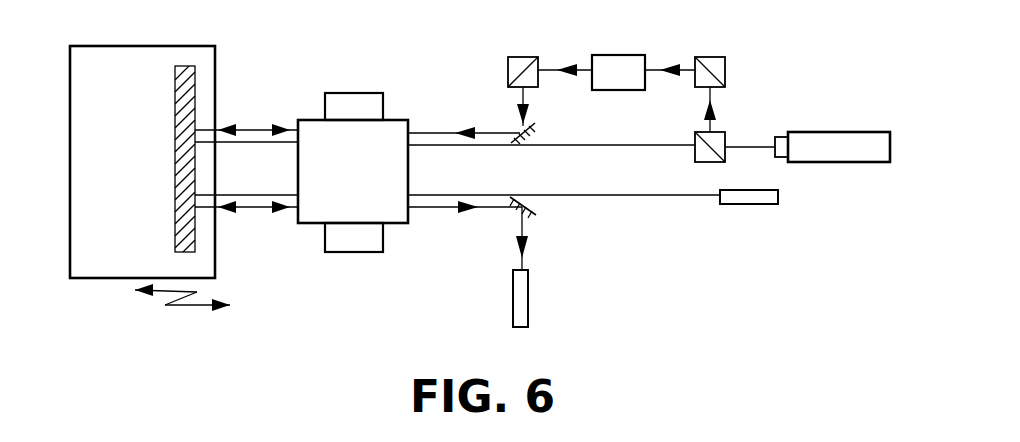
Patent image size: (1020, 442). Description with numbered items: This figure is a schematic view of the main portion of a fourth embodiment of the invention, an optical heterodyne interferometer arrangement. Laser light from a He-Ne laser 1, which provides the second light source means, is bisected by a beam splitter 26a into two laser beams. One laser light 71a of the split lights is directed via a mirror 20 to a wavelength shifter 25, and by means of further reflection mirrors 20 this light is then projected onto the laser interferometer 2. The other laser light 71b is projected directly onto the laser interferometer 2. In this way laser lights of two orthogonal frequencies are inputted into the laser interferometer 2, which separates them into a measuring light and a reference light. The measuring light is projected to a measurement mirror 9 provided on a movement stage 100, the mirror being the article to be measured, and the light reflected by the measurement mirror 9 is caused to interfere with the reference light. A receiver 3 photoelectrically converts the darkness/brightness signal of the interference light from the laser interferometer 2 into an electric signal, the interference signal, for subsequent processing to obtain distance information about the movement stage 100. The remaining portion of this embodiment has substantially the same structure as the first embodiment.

The movement stage 100 is at (100, 278).
The measurement mirror 9 is at (197, 237).
The laser interferometer 2 is at (395, 223).
The mirror 20 is at (540, 134).
The wavelength shifter 25 is at (603, 55).
The laser light 71a is at (705, 97).
The laser light 71b is at (578, 145).
The beam splitter 26a is at (727, 140).
The laser light source 1 is at (860, 132).
The receiver 3 is at (745, 205).